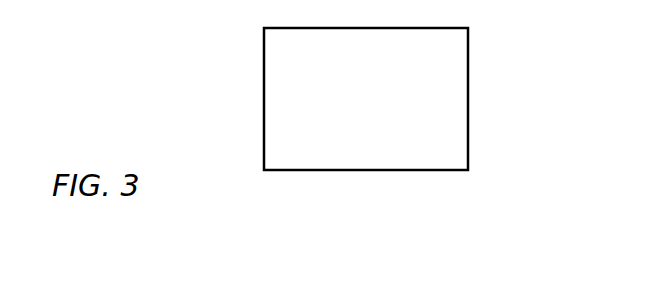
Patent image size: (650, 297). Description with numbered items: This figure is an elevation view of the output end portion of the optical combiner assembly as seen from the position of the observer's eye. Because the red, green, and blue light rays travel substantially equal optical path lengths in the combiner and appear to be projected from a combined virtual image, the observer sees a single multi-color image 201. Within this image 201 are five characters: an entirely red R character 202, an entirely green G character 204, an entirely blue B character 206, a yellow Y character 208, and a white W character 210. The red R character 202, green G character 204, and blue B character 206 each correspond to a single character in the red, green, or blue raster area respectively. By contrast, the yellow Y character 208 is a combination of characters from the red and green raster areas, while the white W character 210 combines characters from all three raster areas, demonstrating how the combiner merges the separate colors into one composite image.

The single multi-color image 201 is at (461, 104).
The entirely red R character 202 is at (283, 53).
The entirely green G character 204 is at (284, 88).
The entirely blue B character 206 is at (284, 122).
The yellow Y character 208 is at (291, 153).
The white W character 210 is at (455, 52).